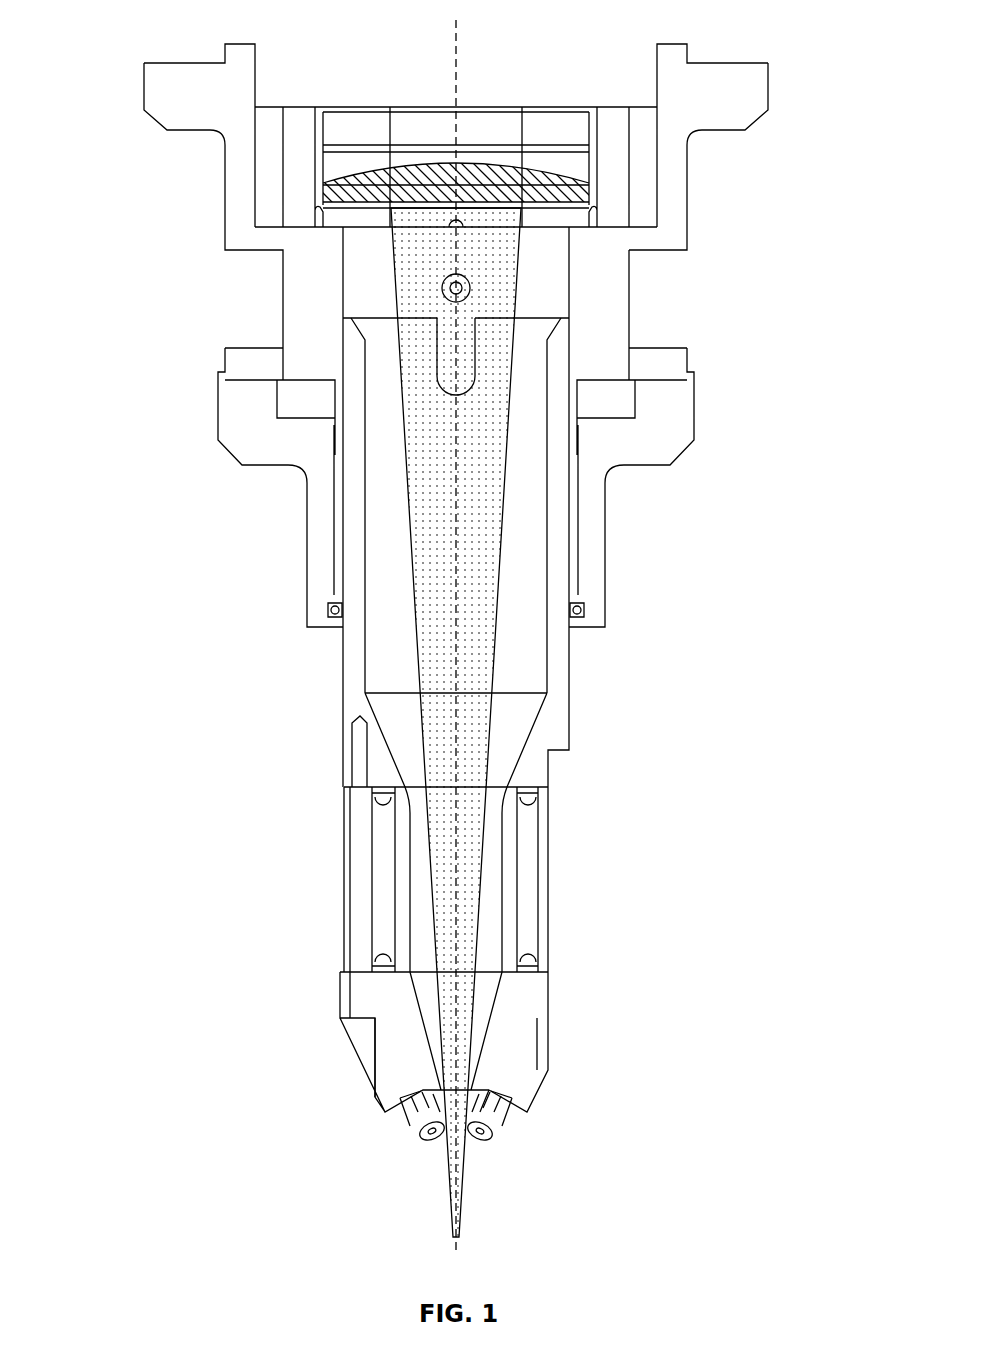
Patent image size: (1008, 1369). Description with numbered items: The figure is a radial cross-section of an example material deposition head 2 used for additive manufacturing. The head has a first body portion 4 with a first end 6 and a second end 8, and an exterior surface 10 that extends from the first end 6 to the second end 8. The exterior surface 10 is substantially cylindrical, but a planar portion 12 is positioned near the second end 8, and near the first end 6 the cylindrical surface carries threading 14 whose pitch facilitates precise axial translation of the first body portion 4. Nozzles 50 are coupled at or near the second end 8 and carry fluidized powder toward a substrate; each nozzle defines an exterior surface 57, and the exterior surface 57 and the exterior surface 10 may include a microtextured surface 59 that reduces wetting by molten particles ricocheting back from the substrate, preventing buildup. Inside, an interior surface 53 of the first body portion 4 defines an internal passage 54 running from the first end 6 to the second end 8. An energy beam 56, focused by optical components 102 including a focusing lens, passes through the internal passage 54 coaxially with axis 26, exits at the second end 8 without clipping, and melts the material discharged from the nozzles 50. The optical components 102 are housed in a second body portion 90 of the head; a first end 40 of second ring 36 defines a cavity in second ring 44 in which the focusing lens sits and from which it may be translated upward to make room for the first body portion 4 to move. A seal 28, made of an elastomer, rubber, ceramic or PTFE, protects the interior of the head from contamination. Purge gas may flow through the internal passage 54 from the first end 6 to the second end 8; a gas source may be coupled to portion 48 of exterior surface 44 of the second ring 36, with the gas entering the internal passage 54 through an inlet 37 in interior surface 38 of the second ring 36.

The material deposition head 2 is at (832, 165).
The first body portion 4 is at (588, 1006).
The first end 6 is at (590, 296).
The second end 8 is at (571, 1108).
The exterior surface 10 is at (340, 884).
The planar portion 12 is at (549, 847).
The threading 14 is at (572, 477).
The axis 26 is at (458, 60).
The seal 28 is at (335, 617).
The second ring 36 is at (752, 88).
The inlet 37 is at (470, 282).
The interior surface 38 is at (658, 163).
The first end 40 is at (188, 47).
The exterior surface 44 is at (222, 183).
The portion 48 is at (630, 316).
The nozzle 50 is at (408, 1130).
The interior surface 53 is at (548, 672).
The internal passage 54 is at (384, 672).
The energy beam 56 is at (445, 1030).
The exterior surface 57 is at (504, 1120).
The microtextured surface 59 is at (355, 1050).
The second body portion 90 is at (104, 74).
The optical components 102 is at (548, 126).